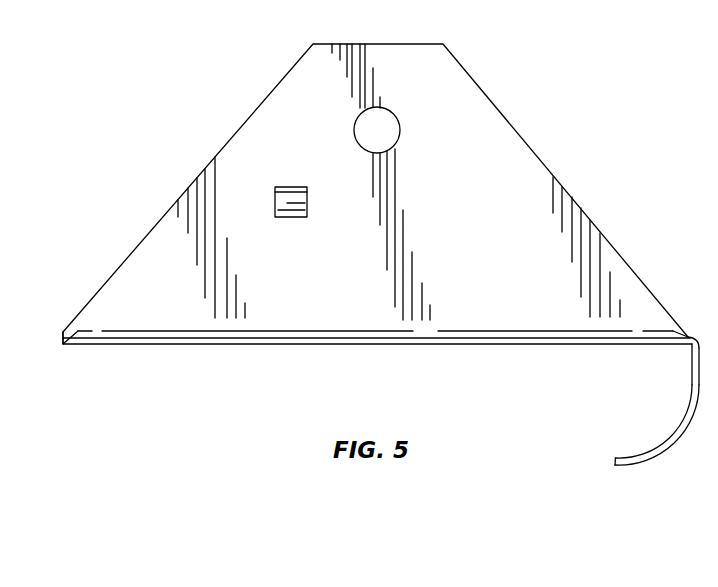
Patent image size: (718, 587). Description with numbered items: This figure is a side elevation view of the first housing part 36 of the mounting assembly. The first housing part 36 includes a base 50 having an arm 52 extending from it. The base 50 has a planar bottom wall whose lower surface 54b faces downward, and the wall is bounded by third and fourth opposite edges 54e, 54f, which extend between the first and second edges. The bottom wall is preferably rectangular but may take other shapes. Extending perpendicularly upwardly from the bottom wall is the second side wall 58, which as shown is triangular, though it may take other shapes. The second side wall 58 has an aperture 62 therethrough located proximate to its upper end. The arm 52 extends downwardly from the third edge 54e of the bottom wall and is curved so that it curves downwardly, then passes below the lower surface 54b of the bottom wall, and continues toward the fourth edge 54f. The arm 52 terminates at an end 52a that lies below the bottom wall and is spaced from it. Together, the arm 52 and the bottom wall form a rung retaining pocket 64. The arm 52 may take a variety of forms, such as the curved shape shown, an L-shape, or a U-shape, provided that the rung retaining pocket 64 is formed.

The first housing part 36 is at (534, 132).
The base 50 is at (157, 352).
The arm 52 is at (665, 452).
The end 52a is at (615, 460).
The lower surface 54b is at (448, 342).
The third edge 54e is at (690, 336).
The fourth edge 54f is at (63, 333).
The second side wall 58 is at (500, 203).
The aperture 62 is at (380, 125).
The rung retaining pocket 64 is at (658, 428).